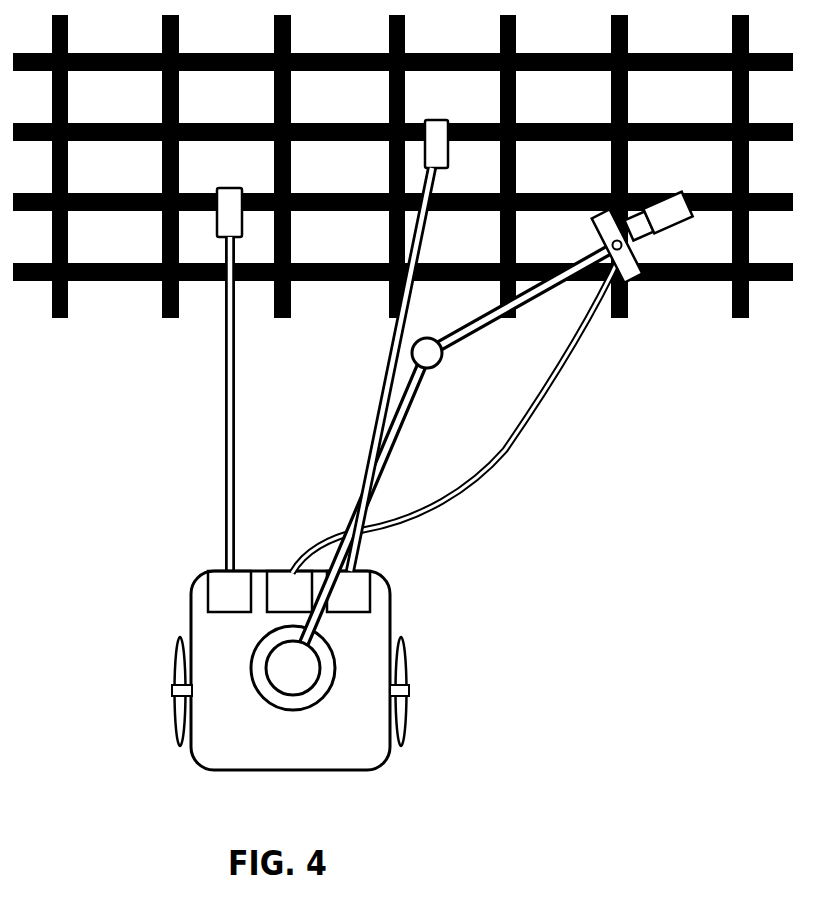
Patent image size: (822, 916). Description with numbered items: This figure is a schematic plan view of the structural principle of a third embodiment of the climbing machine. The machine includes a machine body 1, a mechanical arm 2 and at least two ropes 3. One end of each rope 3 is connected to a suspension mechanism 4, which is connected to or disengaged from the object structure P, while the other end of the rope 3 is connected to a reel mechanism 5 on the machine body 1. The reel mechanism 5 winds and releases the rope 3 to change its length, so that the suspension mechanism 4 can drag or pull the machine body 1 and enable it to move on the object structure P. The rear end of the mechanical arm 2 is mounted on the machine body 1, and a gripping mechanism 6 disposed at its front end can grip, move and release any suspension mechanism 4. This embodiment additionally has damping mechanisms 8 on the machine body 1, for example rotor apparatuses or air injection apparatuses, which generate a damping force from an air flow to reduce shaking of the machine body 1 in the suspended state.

The object structure P is at (59, 318).
The machine body 1 is at (202, 623).
The mechanical arm 2 is at (395, 427).
The rope 3 is at (498, 462).
The suspension mechanism 4 is at (681, 209).
The reel mechanism 5 is at (358, 588).
The gripping mechanism 6 is at (631, 266).
The damping mechanism 8 is at (405, 717).